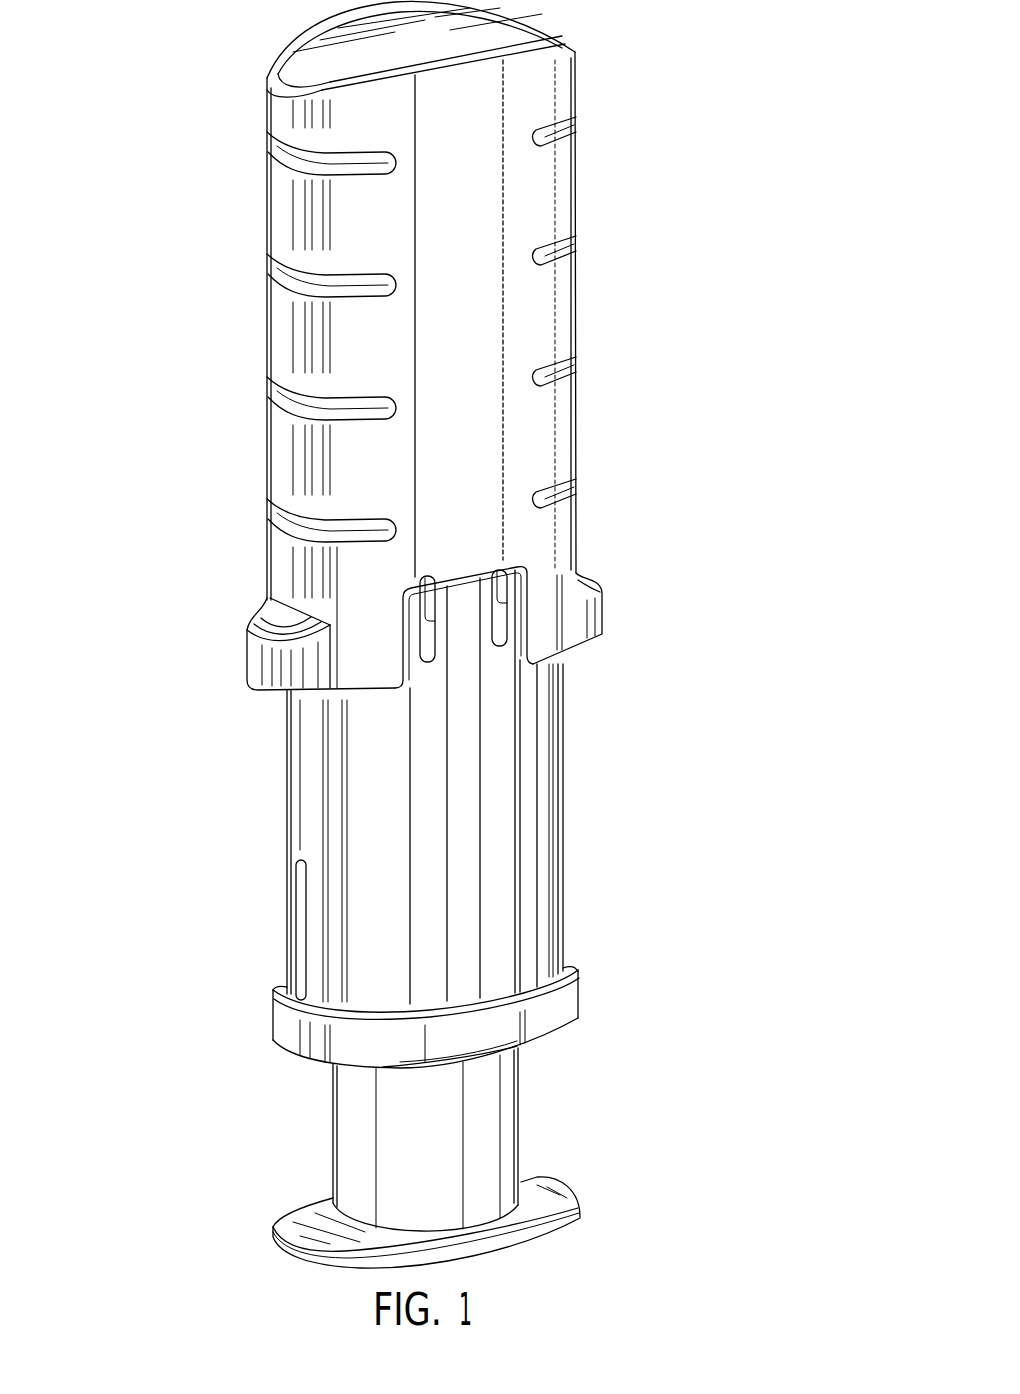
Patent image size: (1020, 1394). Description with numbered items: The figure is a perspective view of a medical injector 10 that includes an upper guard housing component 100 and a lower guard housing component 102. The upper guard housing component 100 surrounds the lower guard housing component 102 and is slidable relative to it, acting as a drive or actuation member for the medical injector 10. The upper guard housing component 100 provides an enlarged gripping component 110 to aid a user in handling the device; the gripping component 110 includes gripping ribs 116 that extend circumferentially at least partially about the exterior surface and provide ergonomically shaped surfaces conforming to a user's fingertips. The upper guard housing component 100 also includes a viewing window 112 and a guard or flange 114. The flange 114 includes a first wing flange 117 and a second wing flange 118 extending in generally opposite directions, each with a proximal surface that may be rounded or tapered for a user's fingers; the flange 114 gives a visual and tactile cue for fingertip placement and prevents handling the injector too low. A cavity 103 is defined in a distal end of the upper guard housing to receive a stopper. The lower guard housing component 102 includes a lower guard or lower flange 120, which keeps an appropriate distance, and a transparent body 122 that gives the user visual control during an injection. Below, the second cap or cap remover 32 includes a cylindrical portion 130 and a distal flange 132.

The medical injector 10 is at (164, 322).
The upper guard housing component 100 is at (695, 292).
The lower guard housing component 102 is at (698, 773).
The cavity 103 is at (460, 600).
The gripping component 110 is at (248, 136).
The viewing window 112 is at (542, 617).
The guard or flange 114 is at (268, 666).
The gripping ribs 116 is at (266, 272).
The first wing flange 117 is at (262, 624).
The second wing flange 118 is at (585, 583).
The lower guard or lower flange 120 is at (570, 1004).
The transparent body 122 is at (528, 808).
The second cap or cap remover 32 is at (599, 1096).
The cylindrical portion 130 is at (355, 1146).
The distal flange 132 is at (282, 1243).